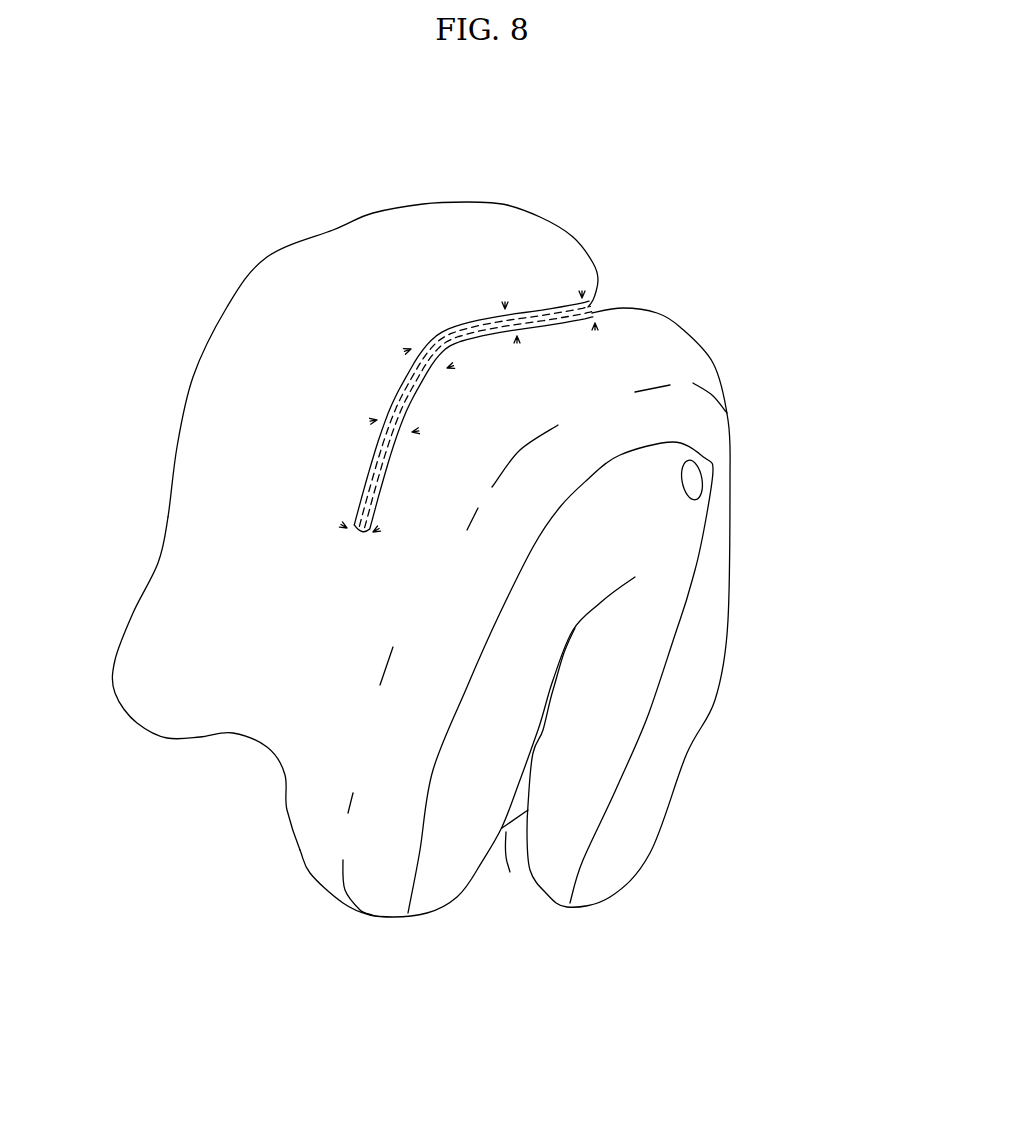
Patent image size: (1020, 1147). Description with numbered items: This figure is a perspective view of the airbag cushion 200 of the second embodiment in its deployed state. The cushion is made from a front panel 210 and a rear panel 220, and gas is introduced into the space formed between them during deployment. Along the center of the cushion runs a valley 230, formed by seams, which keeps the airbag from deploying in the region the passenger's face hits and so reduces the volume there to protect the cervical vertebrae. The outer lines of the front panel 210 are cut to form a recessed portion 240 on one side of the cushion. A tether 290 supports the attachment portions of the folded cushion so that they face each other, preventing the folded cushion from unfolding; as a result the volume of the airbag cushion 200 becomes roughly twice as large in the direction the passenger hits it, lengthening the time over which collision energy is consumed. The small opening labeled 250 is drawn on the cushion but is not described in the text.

The airbag cushion 200 is at (353, 1060).
The front panel 210 is at (383, 883).
The rear panel 220 is at (453, 877).
The valley 230 is at (350, 447).
The recessed portion 240 is at (212, 790).
The vent hole 250 is at (693, 483).
The tether 290 is at (510, 872).